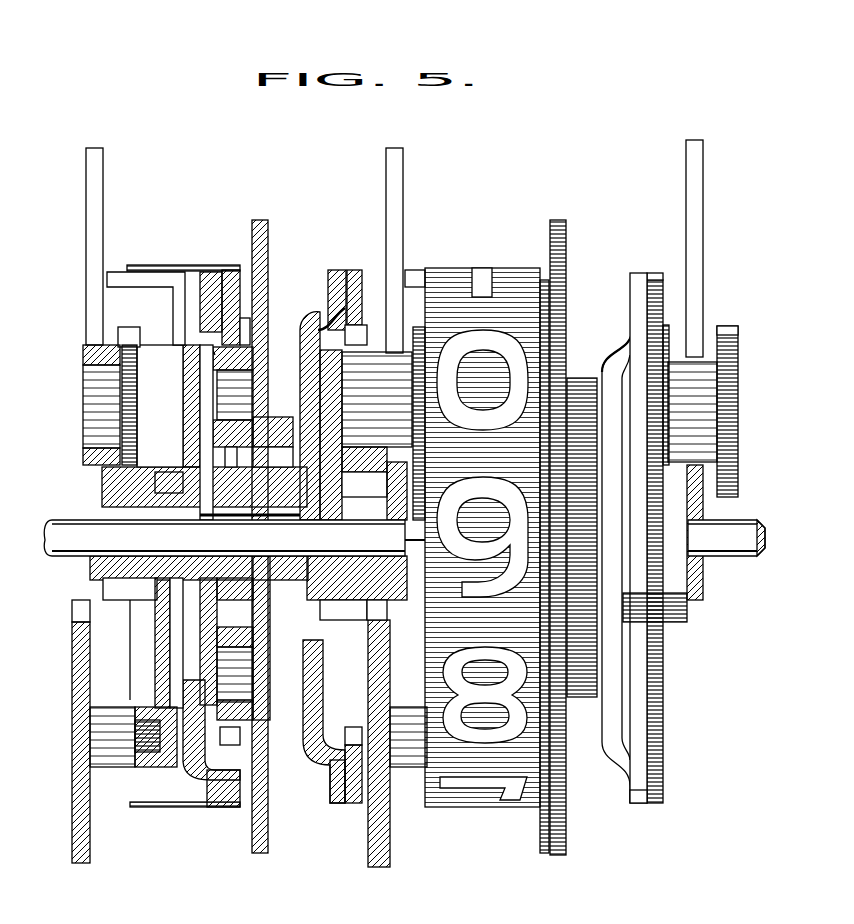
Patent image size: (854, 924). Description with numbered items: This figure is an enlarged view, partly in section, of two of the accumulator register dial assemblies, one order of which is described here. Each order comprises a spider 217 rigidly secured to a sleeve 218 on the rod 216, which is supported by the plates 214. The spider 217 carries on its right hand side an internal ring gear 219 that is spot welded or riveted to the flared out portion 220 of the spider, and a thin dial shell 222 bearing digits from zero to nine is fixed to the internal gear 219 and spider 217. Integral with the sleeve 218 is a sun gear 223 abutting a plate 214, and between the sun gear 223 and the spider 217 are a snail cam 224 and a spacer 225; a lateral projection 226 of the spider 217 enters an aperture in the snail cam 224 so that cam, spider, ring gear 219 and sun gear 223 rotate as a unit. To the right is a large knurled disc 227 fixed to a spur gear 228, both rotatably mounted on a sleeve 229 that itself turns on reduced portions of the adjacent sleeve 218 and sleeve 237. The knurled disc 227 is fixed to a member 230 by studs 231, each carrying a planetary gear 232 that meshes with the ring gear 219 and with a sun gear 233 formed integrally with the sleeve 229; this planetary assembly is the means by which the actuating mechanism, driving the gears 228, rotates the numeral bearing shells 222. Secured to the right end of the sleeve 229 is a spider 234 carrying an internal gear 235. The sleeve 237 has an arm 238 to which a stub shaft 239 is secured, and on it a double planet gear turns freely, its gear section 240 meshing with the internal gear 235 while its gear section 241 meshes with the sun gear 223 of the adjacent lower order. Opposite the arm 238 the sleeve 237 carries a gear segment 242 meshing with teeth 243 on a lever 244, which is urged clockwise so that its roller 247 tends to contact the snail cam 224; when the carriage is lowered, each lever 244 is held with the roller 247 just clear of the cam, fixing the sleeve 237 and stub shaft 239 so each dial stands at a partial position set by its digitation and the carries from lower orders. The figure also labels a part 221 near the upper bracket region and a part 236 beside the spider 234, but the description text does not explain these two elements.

The plate 214 is at (104, 162).
The rod 216 is at (90, 528).
The spider 217 is at (215, 365).
The sleeve 218 is at (83, 626).
The internal ring gear 219 is at (226, 280).
The flared out portion 220 is at (210, 272).
The bracket 221 is at (118, 270).
The dial shell 222 is at (160, 266).
The sun gear 223 is at (410, 558).
The snail cam 224 is at (165, 667).
The spacer 225 is at (175, 472).
The lateral projection 226 is at (130, 600).
The knurled disc 227 is at (258, 220).
The spur gear 228 is at (285, 335).
The sleeve 229 is at (275, 507).
The member 230 is at (215, 355).
The stud 231 is at (225, 393).
The planetary gear 232 is at (244, 325).
The sun gear 233 is at (232, 470).
The spider 234 is at (337, 270).
The internal gear 235 is at (355, 270).
The sleeve 236 is at (637, 273).
The sleeve 237 is at (388, 575).
The arm 238 is at (322, 328).
The stub shaft 239 is at (247, 405).
The gear section 240 is at (360, 325).
The gear section 241 is at (130, 327).
The gear segment 242 is at (350, 612).
The teeth 243 is at (82, 612).
The lever 244 is at (78, 825).
The roller 247 is at (150, 745).